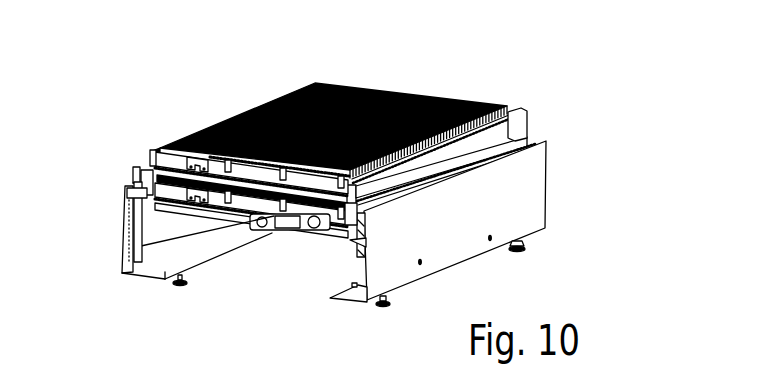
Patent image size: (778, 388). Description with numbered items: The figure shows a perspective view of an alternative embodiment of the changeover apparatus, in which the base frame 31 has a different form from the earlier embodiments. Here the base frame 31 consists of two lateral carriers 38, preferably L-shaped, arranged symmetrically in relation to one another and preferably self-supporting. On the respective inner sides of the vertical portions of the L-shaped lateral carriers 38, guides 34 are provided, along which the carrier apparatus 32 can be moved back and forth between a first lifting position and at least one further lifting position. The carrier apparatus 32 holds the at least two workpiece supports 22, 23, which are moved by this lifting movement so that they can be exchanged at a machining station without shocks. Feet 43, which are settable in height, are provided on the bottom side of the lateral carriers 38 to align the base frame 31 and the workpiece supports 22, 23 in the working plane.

The workpiece support 22 is at (156, 148).
The workpiece support 23 is at (136, 175).
The base frame 31 is at (361, 171).
The carrier apparatus 32 is at (537, 127).
The guides 34 is at (128, 256).
The lateral carrier 38 is at (532, 183).
The feet 43 is at (517, 252).